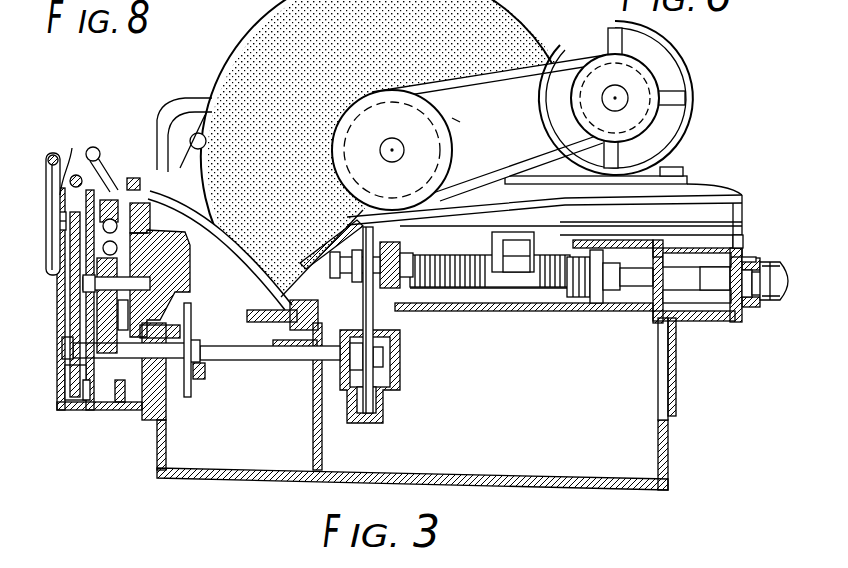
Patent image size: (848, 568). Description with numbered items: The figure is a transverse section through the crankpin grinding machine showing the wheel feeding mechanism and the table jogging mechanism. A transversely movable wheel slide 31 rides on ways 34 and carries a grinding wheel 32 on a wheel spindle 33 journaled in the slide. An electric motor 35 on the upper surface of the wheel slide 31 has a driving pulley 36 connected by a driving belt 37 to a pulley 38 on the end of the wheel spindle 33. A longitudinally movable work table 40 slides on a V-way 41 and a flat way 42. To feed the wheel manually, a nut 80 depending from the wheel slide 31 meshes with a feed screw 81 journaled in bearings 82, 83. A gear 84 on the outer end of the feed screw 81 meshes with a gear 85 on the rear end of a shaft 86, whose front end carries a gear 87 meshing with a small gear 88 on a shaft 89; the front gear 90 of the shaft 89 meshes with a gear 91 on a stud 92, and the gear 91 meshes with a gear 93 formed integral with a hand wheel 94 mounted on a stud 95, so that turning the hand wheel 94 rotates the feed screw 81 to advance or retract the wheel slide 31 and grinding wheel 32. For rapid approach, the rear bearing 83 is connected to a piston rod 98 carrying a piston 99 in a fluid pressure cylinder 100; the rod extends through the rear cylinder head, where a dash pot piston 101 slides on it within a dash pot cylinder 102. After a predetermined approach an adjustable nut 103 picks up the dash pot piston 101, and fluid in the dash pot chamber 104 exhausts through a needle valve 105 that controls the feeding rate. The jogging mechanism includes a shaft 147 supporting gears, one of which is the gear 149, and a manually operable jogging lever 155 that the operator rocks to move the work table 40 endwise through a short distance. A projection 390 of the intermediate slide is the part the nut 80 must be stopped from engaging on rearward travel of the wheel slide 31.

The wheel slide 31 is at (716, 186).
The grinding wheel 32 is at (246, 48).
The wheel spindle 33 is at (380, 145).
The ways 34 is at (742, 242).
The electric motor 35 is at (686, 66).
The driving pulley 36 is at (572, 106).
The driving belt 37 is at (506, 164).
The pulley 38 is at (450, 125).
The work table 40 is at (148, 184).
The V-way 41 is at (180, 262).
The flat way 42 is at (260, 310).
The nut 80 is at (492, 256).
The feed screw 81 is at (478, 290).
The bearing 82 is at (400, 250).
The bearing 83 is at (567, 262).
The gear 84 is at (378, 298).
The gear 85 is at (374, 396).
The shaft 86 is at (232, 362).
The gear 87 is at (192, 334).
The small gear 88 is at (186, 360).
The shaft 89 is at (188, 382).
The gear 90 is at (72, 372).
The gear 91 is at (70, 300).
The stud 92 is at (66, 272).
The gear 93 is at (72, 148).
The hand wheel 94 is at (46, 172).
The stud 95 is at (50, 223).
The piston rod 98 is at (630, 286).
The piston 99 is at (688, 302).
The fluid pressure cylinder 100 is at (718, 322).
The dash pot piston 101 is at (758, 300).
The dash pot cylinder 102 is at (788, 300).
The adjustable nut 103 is at (782, 262).
The dash pot chamber 104 is at (750, 308).
The needle valve 105 is at (745, 260).
The shaft 147 is at (160, 284).
The gear 149 is at (96, 402).
The jogging lever 155 is at (94, 146).
The projection 390 is at (578, 241).